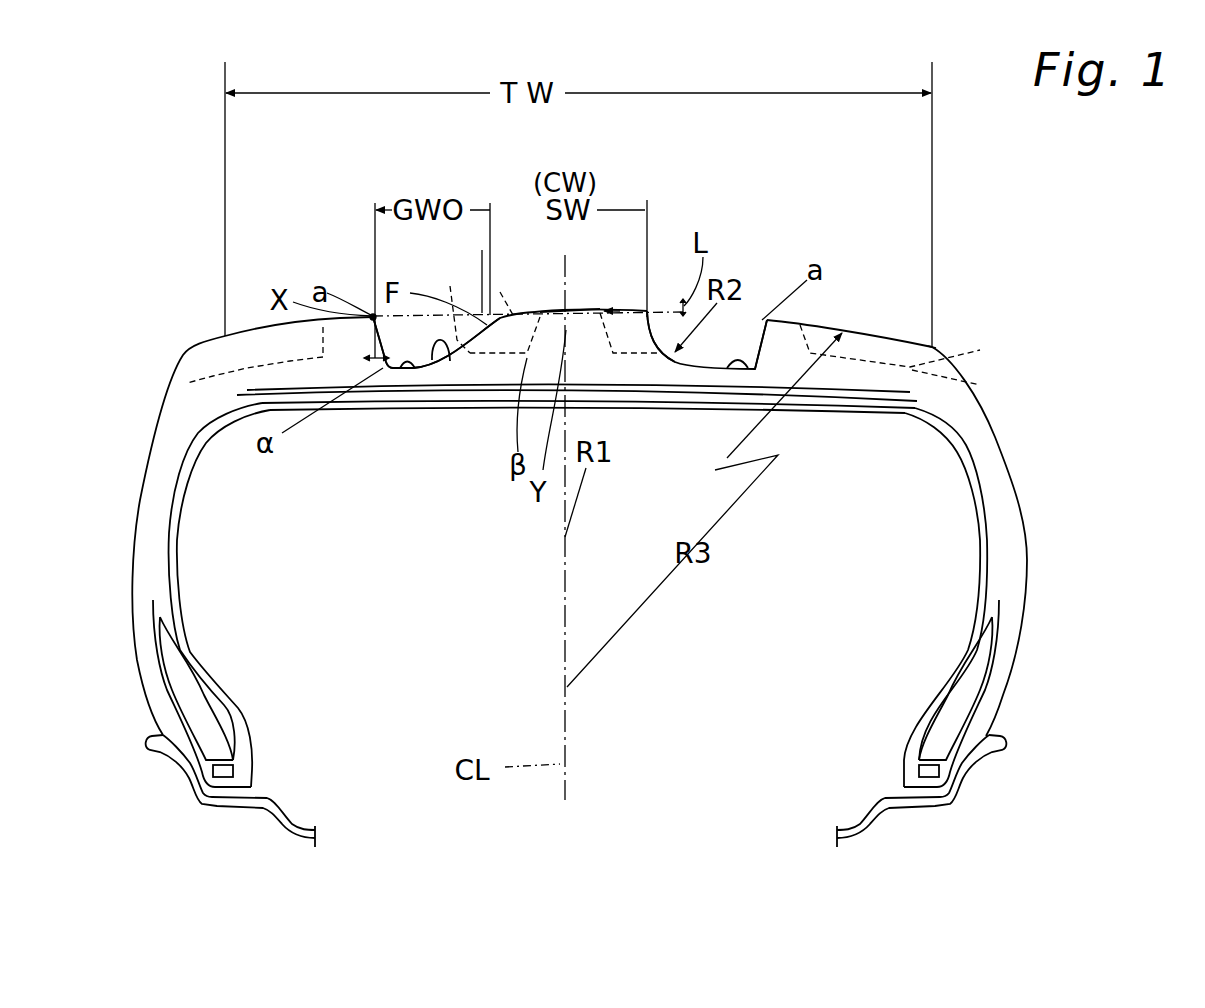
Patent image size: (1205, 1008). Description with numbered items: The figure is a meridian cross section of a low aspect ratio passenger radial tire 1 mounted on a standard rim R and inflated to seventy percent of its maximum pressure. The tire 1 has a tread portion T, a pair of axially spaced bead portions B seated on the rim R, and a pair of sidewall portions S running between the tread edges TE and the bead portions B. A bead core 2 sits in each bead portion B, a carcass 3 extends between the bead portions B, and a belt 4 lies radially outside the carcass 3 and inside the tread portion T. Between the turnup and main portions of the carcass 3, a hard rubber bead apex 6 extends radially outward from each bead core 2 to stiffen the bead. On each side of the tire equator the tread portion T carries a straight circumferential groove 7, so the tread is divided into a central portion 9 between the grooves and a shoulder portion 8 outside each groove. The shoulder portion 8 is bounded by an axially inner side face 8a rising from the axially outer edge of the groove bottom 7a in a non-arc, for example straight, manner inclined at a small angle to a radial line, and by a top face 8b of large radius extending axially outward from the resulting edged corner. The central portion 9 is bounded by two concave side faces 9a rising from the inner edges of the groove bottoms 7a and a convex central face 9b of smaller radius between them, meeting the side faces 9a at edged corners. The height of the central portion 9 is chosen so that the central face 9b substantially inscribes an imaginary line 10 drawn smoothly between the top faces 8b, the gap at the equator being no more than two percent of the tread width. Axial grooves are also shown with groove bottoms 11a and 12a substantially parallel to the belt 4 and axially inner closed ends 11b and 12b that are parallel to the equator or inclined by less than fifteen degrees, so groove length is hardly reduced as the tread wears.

The tire 1 is at (1000, 360).
The bead core 2 is at (940, 776).
The carcass 3 is at (995, 541).
The belt 4 is at (912, 392).
The bead apex 6 is at (992, 668).
The circumferential groove 7 is at (376, 362).
The bottom of circumferential groove 7a is at (395, 372).
The shoulder portion 8 is at (273, 323).
The inner side face 8a is at (400, 369).
The top face 8b is at (373, 350).
The central portion 9 is at (591, 303).
The concave side face 9a is at (437, 355).
The convex central face 9b is at (535, 313).
The imaginary line 10 is at (752, 325).
The groove bottom of axial groove 11a is at (980, 350).
The axially inner closed end of axial groove 11b is at (808, 353).
The groove bottom of axial groove 12a is at (443, 301).
The axially inner closed end of axial groove 12b is at (504, 288).
The tread portion T is at (820, 316).
The tread edge TE is at (933, 347).
The sidewall portion S is at (1022, 470).
The bead portion B is at (1003, 716).
The standard rim R is at (868, 821).